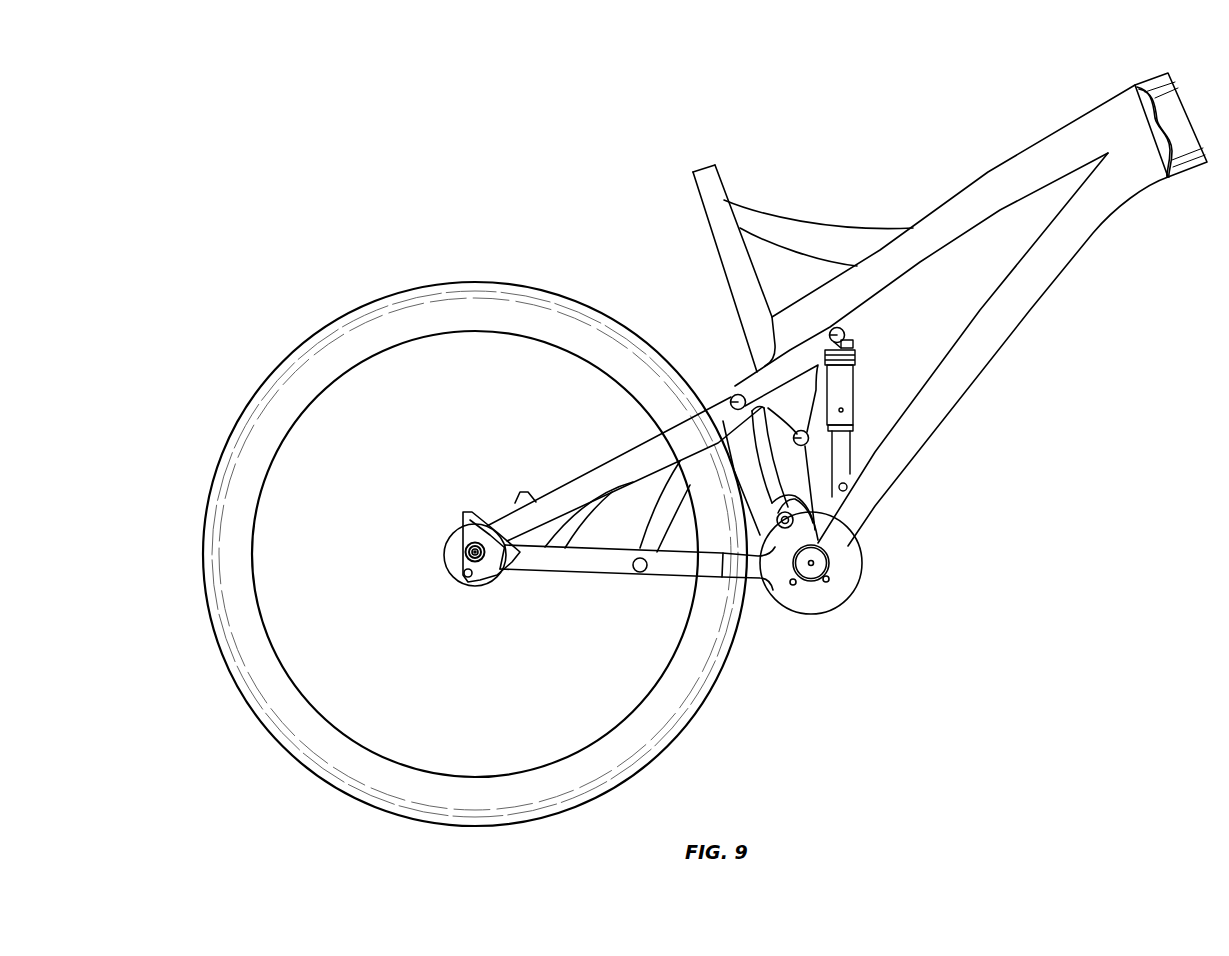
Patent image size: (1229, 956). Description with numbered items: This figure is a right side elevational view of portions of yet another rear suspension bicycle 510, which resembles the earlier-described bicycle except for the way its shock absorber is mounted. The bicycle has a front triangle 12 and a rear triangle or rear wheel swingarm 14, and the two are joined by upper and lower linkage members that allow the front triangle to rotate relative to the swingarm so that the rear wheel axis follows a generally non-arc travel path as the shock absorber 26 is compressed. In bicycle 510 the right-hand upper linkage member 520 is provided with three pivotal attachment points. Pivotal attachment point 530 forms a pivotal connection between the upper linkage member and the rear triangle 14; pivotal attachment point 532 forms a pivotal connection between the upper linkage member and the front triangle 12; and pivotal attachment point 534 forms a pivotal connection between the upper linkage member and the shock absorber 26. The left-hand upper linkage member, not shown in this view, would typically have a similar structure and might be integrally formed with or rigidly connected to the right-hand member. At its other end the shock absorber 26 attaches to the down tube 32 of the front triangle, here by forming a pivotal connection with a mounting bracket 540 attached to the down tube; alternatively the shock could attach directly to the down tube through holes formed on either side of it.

The bicycle 510 is at (705, 449).
The front triangle 12 is at (1003, 416).
The rear triangle 14 is at (600, 603).
The shock absorber 26 is at (847, 399).
The down tube 32 is at (1012, 335).
The upper linkage member 520 is at (770, 388).
The pivotal attachment point 530 is at (731, 399).
The pivotal attachment point 532 is at (809, 441).
The pivotal attachment point 534 is at (846, 332).
The mounting bracket 540 is at (850, 488).